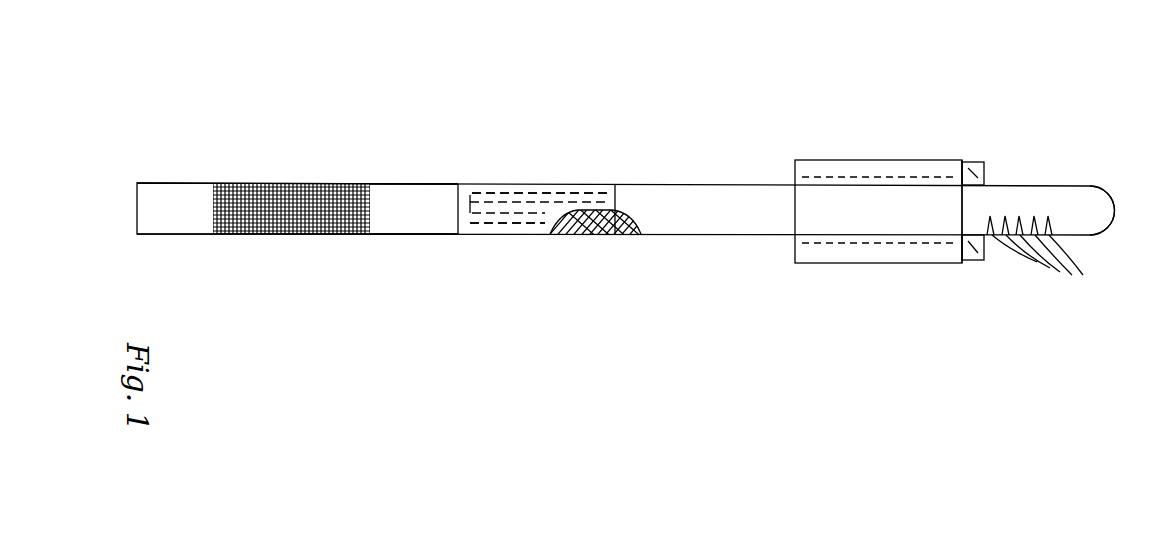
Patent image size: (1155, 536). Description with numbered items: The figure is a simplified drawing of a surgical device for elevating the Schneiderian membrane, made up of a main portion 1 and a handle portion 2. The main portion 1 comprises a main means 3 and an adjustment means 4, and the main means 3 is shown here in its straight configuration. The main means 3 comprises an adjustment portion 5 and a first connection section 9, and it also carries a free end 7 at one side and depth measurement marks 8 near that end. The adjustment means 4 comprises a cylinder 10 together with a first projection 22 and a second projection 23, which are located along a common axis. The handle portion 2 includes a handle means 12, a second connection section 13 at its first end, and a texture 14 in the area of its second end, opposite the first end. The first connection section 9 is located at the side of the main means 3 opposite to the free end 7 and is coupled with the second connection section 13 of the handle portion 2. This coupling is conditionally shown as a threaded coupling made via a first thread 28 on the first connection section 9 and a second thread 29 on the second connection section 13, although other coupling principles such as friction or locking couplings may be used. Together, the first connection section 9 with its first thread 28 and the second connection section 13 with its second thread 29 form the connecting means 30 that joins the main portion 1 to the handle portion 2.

The main portion 1 is at (640, 213).
The handle portion 2 is at (410, 282).
The main means 3 is at (740, 198).
The adjustment means 4 is at (928, 253).
The adjustment portion 5 is at (837, 213).
The free end 7 is at (1105, 213).
The depth measurement marks 8 is at (1036, 256).
The first connection section 9 is at (553, 203).
The cylinder 10 is at (883, 263).
The handle means 12 is at (408, 183).
The second connection section 13 is at (513, 231).
The texture 14 is at (280, 212).
The first projection 22 is at (987, 243).
The second projection 23 is at (970, 172).
The first thread 28 is at (512, 200).
The second thread 29 is at (490, 231).
The connecting means 30 is at (540, 170).